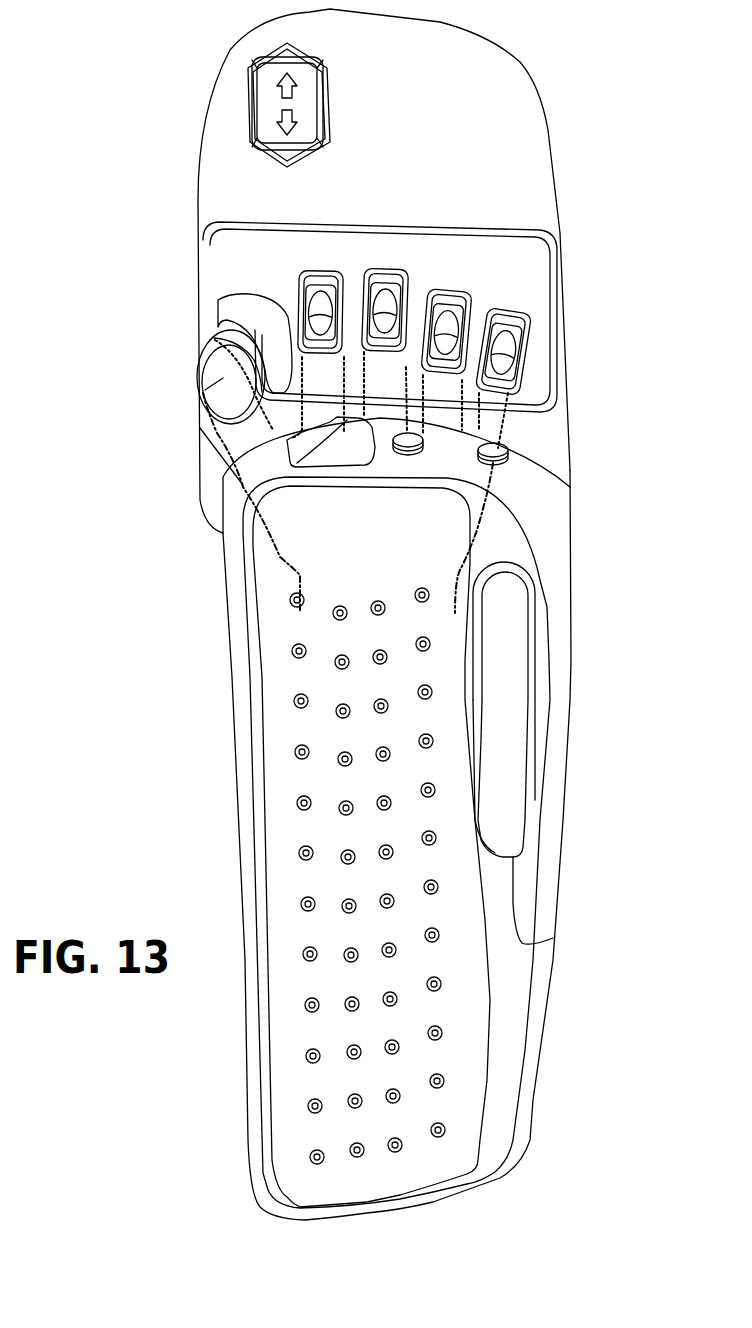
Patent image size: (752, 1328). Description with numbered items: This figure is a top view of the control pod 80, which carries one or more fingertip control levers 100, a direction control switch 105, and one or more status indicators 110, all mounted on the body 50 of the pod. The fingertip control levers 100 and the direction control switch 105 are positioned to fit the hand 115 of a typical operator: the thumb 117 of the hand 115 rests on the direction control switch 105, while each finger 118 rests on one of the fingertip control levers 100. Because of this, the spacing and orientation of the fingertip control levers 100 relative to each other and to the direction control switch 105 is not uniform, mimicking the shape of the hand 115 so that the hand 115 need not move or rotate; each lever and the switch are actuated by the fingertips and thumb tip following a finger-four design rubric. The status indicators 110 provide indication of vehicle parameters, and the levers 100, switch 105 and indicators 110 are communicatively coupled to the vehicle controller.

The control pod 80 is at (557, 62).
The handle body 50 is at (585, 802).
The status indicator 110 is at (330, 108).
The fingertip control lever 100 is at (318, 270).
The finger 118 is at (408, 313).
The hand 115 is at (508, 473).
The direction control switch 105 is at (255, 317).
The thumb 117 is at (220, 436).